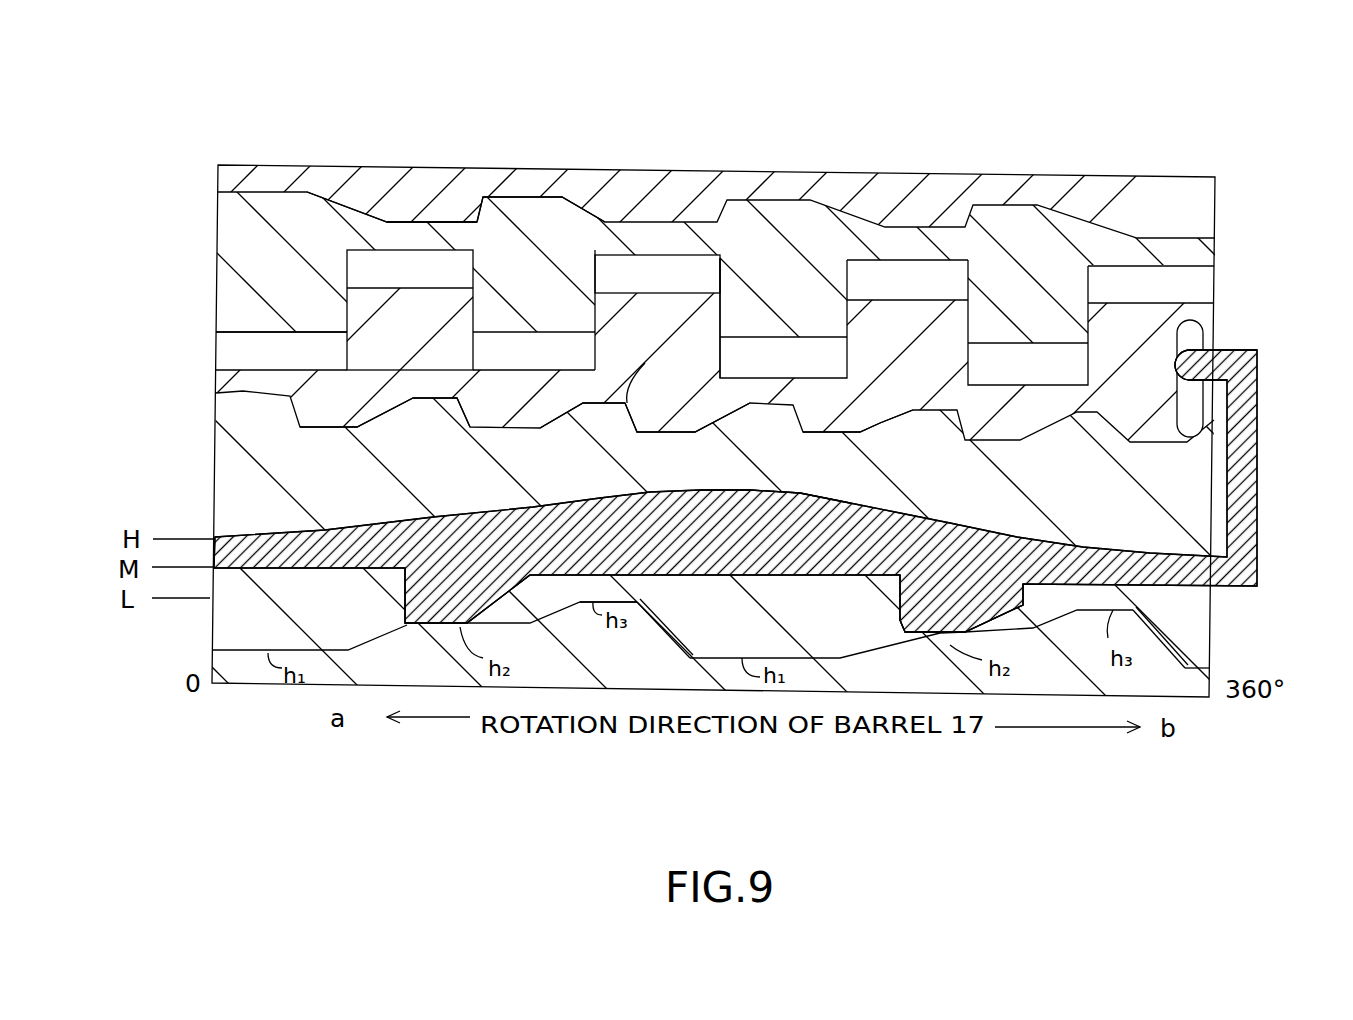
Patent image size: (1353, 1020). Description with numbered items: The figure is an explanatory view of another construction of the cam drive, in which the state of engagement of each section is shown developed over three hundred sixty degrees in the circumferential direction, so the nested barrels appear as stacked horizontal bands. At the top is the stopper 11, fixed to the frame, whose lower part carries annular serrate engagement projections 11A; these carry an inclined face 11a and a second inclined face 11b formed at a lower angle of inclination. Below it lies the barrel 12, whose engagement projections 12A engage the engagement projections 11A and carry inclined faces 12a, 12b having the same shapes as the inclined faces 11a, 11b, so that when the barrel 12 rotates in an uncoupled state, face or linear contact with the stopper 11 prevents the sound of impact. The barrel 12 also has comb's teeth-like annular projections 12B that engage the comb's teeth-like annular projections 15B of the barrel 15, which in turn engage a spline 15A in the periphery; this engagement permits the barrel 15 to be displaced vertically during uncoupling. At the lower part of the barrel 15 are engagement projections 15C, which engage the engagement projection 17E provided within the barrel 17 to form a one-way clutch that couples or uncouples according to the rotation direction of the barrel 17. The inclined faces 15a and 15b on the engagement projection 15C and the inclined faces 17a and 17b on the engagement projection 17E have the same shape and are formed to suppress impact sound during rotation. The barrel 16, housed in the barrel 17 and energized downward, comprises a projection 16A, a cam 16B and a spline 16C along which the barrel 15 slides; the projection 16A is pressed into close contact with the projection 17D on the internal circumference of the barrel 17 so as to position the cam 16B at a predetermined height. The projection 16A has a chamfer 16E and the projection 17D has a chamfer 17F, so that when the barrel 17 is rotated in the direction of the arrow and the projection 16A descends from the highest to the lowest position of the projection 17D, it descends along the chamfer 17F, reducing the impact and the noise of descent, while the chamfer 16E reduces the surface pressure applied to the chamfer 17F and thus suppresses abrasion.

The stopper 11 is at (220, 182).
The engagement projections 11A is at (398, 207).
The inclined face 11a is at (483, 200).
The inclined face 11b is at (352, 194).
The barrel 12 is at (225, 248).
The engagement projections 12A is at (1015, 208).
The comb's teeth-like annular projections 12B is at (285, 325).
The inclined face 12a is at (747, 236).
The inclined face 12b is at (611, 314).
The barrel 15 is at (228, 395).
The spline 15A is at (1195, 312).
The comb's teeth-like annular projections 15B is at (395, 292).
The engagement projections 15C is at (661, 371).
The inclined face 15a is at (847, 386).
The inclined face 15b is at (697, 425).
The barrel 16 is at (1255, 442).
The projection 16A is at (440, 620).
The cam 16B is at (800, 493).
The spline 16C is at (1242, 352).
The chamfer 16E is at (405, 622).
The barrel 17 is at (225, 480).
The projection 17D is at (587, 604).
The engagement projection 17E is at (600, 404).
The chamfer 17F is at (669, 632).
The inclined face 17a is at (458, 400).
The inclined face 17b is at (358, 428).